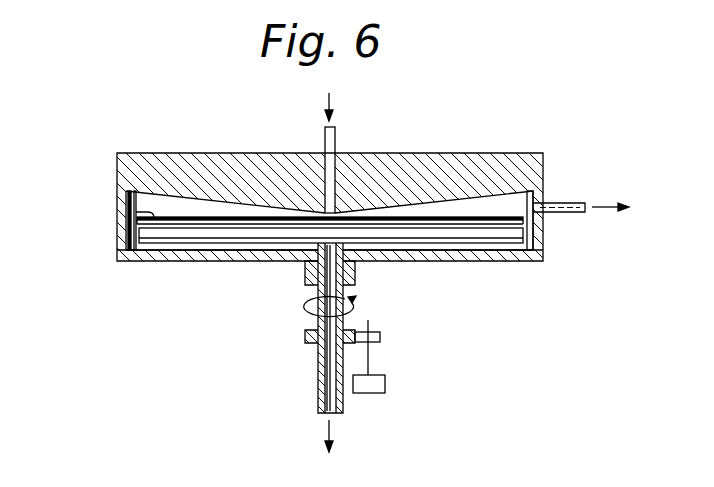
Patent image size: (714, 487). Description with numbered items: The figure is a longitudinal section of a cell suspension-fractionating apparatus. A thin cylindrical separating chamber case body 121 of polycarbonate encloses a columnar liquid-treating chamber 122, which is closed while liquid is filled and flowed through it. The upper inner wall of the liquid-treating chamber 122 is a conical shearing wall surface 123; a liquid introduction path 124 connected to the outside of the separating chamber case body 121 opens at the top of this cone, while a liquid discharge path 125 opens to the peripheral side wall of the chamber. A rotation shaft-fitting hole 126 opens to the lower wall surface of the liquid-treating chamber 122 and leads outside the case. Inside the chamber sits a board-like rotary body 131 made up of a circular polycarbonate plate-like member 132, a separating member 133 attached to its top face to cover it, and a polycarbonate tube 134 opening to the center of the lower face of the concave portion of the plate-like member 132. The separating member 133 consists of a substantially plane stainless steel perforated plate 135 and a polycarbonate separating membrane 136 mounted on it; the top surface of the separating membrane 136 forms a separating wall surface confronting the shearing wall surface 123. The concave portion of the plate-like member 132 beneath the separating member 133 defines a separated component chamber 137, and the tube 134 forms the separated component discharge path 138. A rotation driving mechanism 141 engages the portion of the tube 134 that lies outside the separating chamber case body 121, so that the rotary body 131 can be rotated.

The separating chamber case body 121 is at (545, 168).
The liquid-treating chamber 122 is at (140, 213).
The shearing wall surface 123 is at (135, 203).
The liquid introduction path 124 is at (335, 170).
The liquid discharge path 125 is at (575, 212).
The rotation shaft-fitting hole 126 is at (355, 272).
The rotary body 131 is at (490, 250).
The plate-like member 132 is at (530, 230).
The separating member 133 is at (207, 228).
The tube 134 is at (317, 359).
The perforated plate 135 is at (158, 221).
The separating membrane 136 is at (135, 222).
The separated component chamber 137 is at (272, 243).
The separated component discharge path 138 is at (325, 390).
The rotation driving mechanism 141 is at (365, 358).